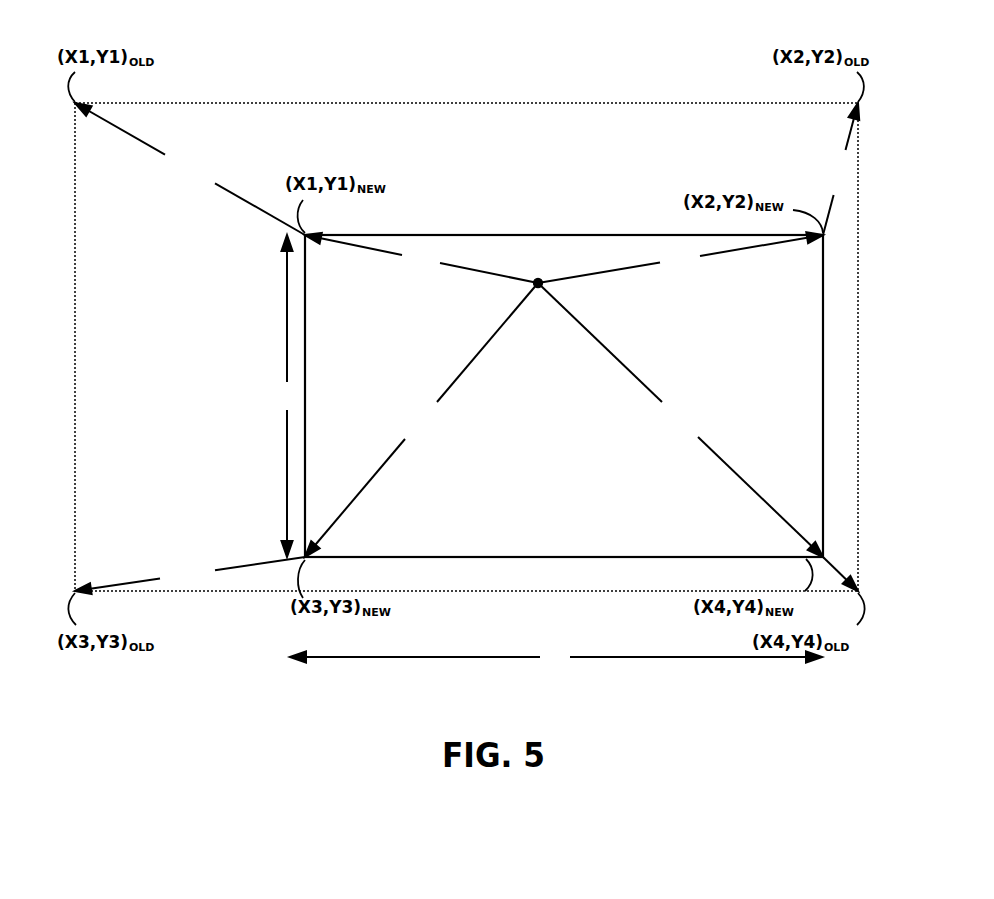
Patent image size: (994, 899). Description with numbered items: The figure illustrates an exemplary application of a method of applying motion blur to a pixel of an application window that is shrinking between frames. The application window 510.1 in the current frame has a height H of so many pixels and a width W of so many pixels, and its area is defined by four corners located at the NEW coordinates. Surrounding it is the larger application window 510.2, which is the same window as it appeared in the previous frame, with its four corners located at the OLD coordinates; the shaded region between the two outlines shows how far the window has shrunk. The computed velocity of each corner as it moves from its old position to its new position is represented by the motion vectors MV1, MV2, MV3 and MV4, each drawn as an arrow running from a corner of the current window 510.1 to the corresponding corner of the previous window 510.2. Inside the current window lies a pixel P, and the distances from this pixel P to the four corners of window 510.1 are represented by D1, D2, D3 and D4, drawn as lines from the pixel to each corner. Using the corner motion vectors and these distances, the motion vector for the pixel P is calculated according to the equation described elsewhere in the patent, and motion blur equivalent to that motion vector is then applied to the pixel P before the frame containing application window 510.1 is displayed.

The application window 510.1 is at (564, 396).
The application window 510.2 is at (466, 347).
The pixel P is at (538, 287).
The distance D1 is at (421, 258).
The distance D2 is at (680, 257).
The distance D3 is at (421, 420).
The distance D4 is at (680, 420).
The motion vector MV1 is at (190, 169).
The motion vector MV2 is at (841, 169).
The motion vector MV3 is at (190, 575).
The motion vector MV4 is at (852, 569).
The height H is at (288, 396).
The width W is at (556, 658).